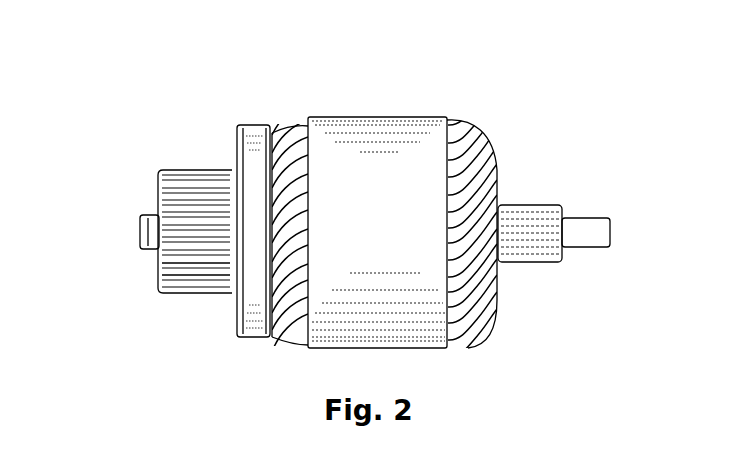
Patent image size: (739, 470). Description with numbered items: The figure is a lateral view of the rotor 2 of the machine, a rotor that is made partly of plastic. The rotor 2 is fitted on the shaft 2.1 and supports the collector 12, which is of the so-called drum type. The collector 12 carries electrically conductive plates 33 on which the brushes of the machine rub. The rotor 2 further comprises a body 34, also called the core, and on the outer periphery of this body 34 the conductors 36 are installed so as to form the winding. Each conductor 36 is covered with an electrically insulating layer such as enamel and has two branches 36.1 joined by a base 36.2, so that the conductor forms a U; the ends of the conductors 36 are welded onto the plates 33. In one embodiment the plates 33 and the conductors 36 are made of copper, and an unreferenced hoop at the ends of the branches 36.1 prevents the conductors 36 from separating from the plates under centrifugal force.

The rotor 2 is at (387, 72).
The shaft 2.1 is at (143, 233).
The collector 12 is at (177, 171).
The electrically conductive plates 33 is at (181, 262).
The body 34 is at (417, 158).
The conductors 36 is at (278, 116).
The branches 36.1 is at (278, 125).
The base 36.2 is at (475, 128).